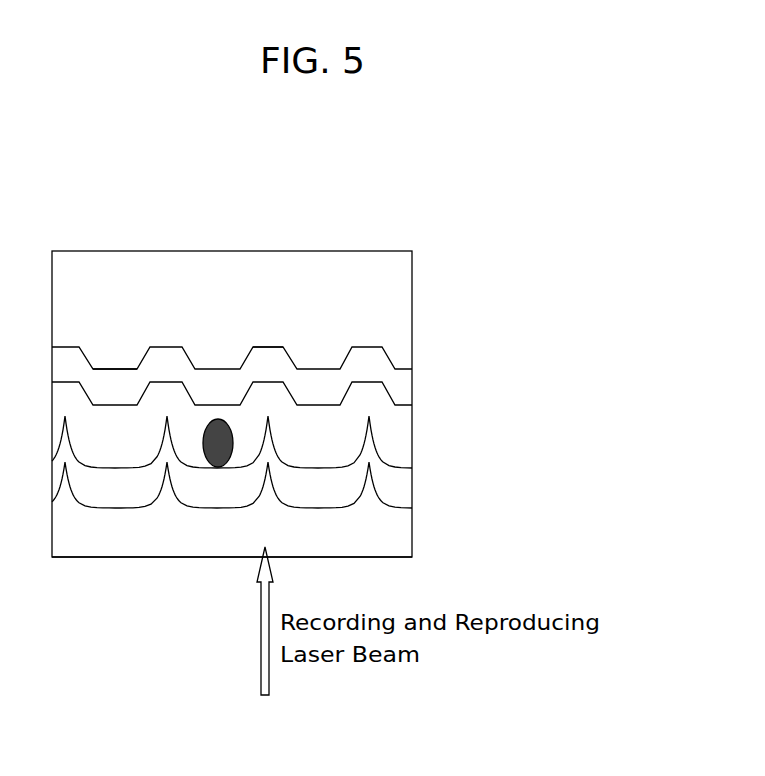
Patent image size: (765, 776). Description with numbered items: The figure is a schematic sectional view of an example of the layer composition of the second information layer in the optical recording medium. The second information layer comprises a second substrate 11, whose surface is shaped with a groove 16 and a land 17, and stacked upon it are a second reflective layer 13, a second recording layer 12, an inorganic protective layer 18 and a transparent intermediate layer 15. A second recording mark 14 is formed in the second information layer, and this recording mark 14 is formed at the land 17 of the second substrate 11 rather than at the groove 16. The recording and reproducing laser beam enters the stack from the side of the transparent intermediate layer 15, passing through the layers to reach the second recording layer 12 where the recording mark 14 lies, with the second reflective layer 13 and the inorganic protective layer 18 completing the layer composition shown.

The second substrate 11 is at (368, 293).
The second recording layer 12 is at (339, 440).
The second reflective layer 13 is at (370, 362).
The second recording mark 14 is at (250, 406).
The transparent intermediate layer 15 is at (353, 536).
The groove 16 is at (271, 332).
The land 17 is at (115, 354).
The inorganic protective layer 18 is at (353, 486).